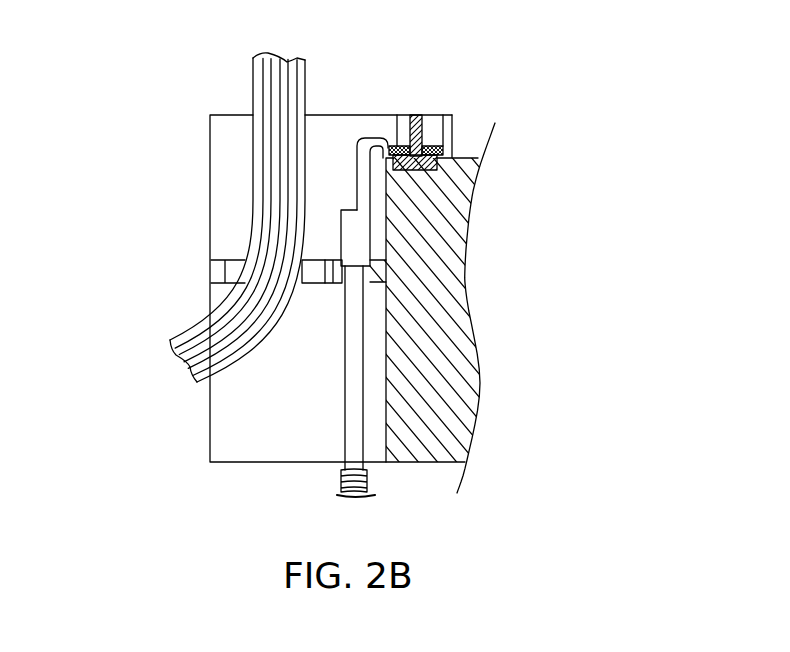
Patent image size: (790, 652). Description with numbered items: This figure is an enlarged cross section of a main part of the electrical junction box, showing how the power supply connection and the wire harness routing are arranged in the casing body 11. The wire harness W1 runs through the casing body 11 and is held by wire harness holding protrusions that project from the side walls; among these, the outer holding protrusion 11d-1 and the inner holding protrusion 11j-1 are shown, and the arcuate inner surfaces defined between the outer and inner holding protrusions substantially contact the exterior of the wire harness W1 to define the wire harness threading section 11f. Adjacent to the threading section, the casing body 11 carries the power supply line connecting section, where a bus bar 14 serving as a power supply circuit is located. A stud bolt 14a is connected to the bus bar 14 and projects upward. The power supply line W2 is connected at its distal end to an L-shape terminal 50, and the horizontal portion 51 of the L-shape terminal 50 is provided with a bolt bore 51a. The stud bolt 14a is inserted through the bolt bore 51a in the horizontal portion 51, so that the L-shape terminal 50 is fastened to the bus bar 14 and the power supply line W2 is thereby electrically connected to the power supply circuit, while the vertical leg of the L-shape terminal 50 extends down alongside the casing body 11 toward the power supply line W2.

The casing body 11 is at (170, 189).
The wire harness W1 is at (257, 80).
The outer holding protrusion 11d-1 is at (213, 267).
The inner holding protrusion 11j-1 is at (317, 270).
The wire harness threading section 11f is at (377, 273).
The bus bar 14 is at (476, 188).
The stud bolt 14a is at (437, 117).
The horizontal portion 51 is at (411, 114).
The bolt bore 51a is at (442, 146).
The L-shape terminal 50 is at (372, 237).
The power supply line W2 is at (344, 442).